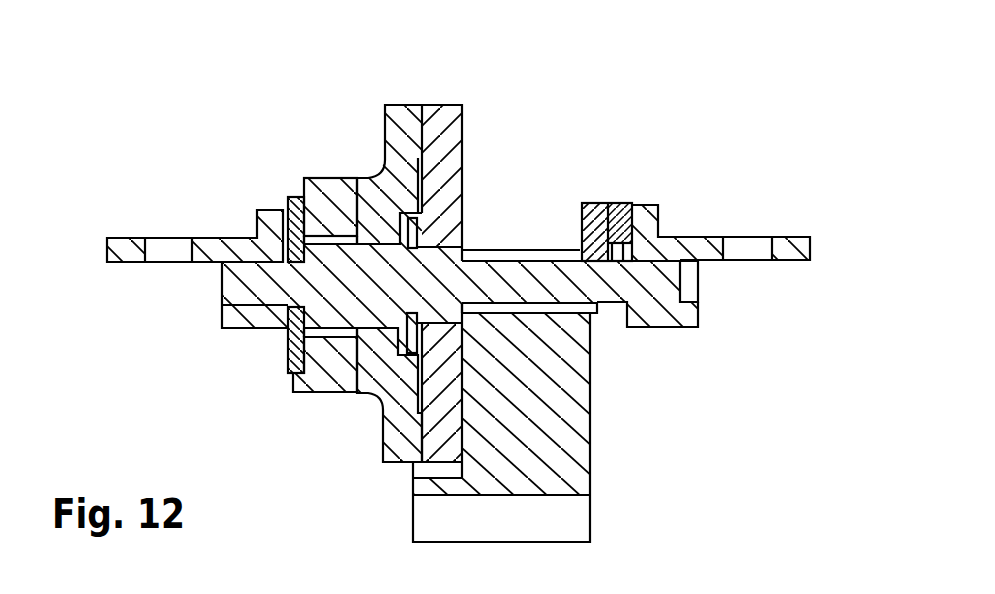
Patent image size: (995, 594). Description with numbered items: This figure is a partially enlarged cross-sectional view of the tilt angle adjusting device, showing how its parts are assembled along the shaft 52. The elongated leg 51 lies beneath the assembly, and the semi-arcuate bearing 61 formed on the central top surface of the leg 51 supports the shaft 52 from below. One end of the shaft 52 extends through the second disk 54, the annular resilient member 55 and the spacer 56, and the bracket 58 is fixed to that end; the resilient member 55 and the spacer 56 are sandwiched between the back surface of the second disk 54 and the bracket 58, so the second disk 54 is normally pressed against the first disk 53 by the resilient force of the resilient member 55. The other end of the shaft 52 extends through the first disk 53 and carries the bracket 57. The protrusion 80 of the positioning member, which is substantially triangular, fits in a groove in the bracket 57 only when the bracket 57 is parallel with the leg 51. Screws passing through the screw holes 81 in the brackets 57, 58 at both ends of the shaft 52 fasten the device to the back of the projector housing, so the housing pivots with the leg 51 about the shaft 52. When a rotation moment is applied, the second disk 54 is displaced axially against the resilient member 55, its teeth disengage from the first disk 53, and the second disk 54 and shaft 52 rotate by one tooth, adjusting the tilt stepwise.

The leg 51 is at (590, 480).
The shaft 52 is at (505, 275).
The first disk 53 is at (438, 105).
The second disk 54 is at (403, 105).
The resilient member 55 is at (327, 178).
The spacer 56 is at (292, 197).
The bracket 57 is at (684, 237).
The bracket 58 is at (218, 238).
The semi-arcuate bearing 61 is at (592, 337).
The protrusion 80 is at (618, 203).
The screw hole 81 is at (170, 252).